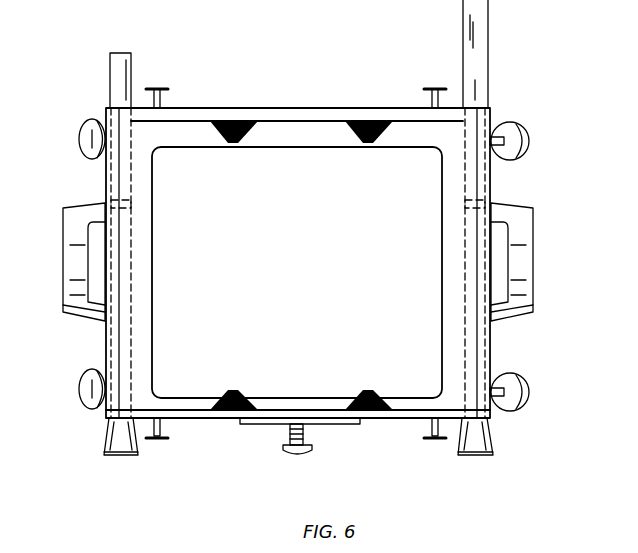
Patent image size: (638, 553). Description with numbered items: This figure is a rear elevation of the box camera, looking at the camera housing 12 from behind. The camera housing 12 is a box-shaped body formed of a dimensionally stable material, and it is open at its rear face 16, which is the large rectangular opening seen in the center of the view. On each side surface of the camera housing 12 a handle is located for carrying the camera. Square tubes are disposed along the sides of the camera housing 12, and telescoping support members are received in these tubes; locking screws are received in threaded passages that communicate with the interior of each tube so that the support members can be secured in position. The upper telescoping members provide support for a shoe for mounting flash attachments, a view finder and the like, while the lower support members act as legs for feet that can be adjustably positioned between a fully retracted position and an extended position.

The camera housing 12 is at (492, 172).
The rear face 16 is at (270, 180).